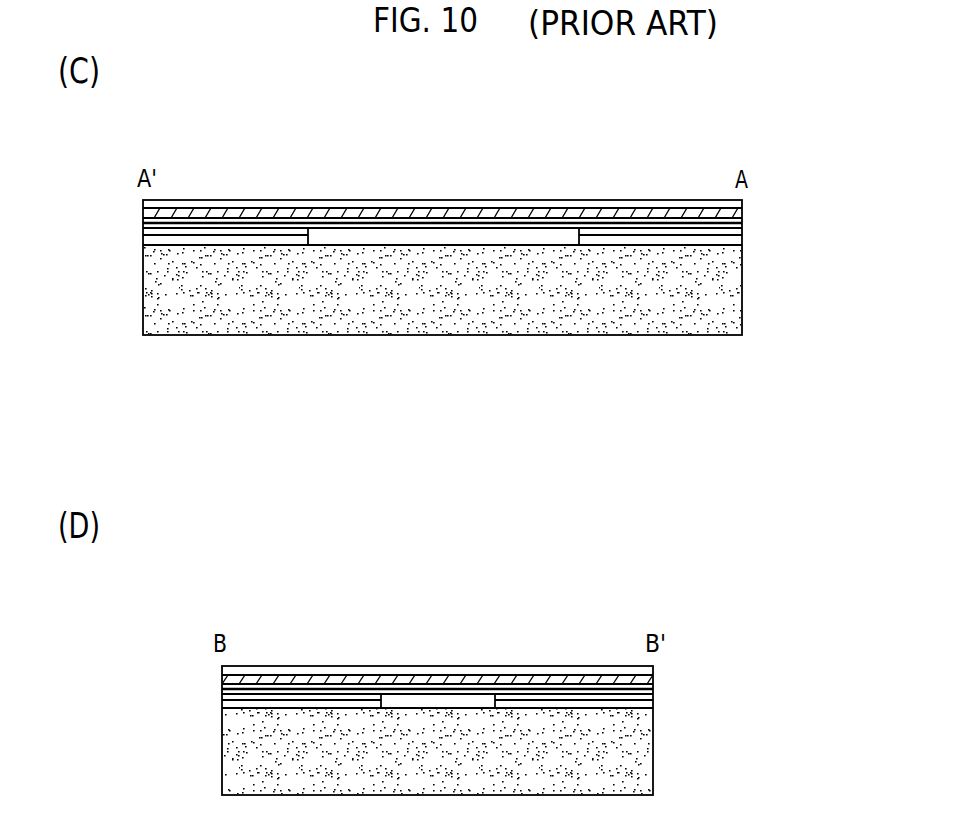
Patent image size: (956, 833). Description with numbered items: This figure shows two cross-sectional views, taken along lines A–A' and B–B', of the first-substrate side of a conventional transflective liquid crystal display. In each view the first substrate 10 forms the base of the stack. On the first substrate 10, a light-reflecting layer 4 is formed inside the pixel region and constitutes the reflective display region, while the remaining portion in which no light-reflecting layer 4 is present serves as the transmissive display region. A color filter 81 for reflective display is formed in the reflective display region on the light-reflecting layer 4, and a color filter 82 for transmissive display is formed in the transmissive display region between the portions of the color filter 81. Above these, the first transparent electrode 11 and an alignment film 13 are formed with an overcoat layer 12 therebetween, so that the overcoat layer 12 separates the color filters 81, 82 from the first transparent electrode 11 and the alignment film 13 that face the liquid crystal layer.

The light-reflecting layer 4 is at (742, 240).
The first substrate 10 is at (735, 303).
The first transparent electrode 11 is at (143, 211).
The overcoat layer 12 is at (742, 222).
The alignment film 13 is at (742, 202).
The color filter for reflective display 81 is at (143, 233).
The color filter for transmissive display 82 is at (442, 240).